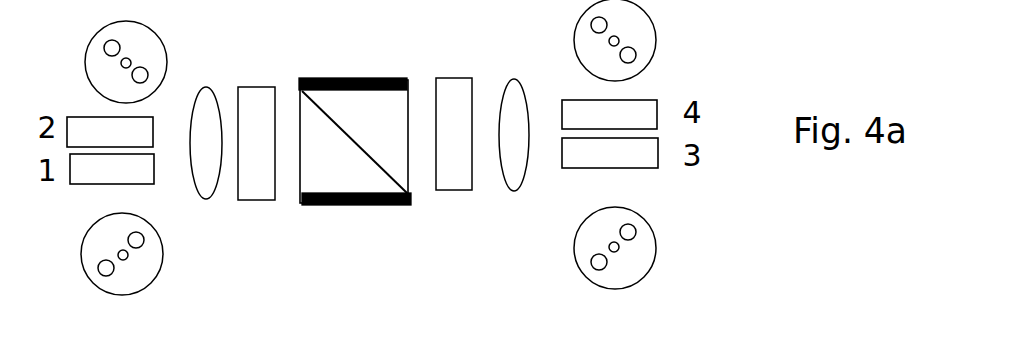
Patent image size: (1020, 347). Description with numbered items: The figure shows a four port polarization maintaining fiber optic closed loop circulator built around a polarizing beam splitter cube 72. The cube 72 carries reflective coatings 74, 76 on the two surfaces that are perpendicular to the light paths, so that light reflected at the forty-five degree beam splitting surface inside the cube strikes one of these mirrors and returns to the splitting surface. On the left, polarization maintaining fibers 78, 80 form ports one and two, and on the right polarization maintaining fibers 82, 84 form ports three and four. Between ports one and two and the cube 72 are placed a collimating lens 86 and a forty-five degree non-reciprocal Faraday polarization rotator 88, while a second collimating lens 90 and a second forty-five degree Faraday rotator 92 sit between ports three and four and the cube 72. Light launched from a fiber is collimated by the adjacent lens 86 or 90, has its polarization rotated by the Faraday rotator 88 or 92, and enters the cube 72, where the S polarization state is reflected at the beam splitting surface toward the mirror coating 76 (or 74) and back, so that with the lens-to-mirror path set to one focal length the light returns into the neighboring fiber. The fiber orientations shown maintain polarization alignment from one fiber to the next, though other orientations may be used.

The polarizing beam splitter cube 72 is at (343, 114).
The reflective coating 74 is at (372, 80).
The reflective coating 76 is at (330, 205).
The polarization maintaining fiber 78 is at (86, 172).
The polarization maintaining fiber 80 is at (88, 128).
The polarization maintaining fiber 82 is at (632, 158).
The polarization maintaining fiber 84 is at (638, 112).
The collimating lens 86 is at (207, 190).
The 45° Faraday polarization rotator 88 is at (250, 192).
The collimating lens 90 is at (513, 177).
The 45° Faraday rotator 92 is at (452, 82).